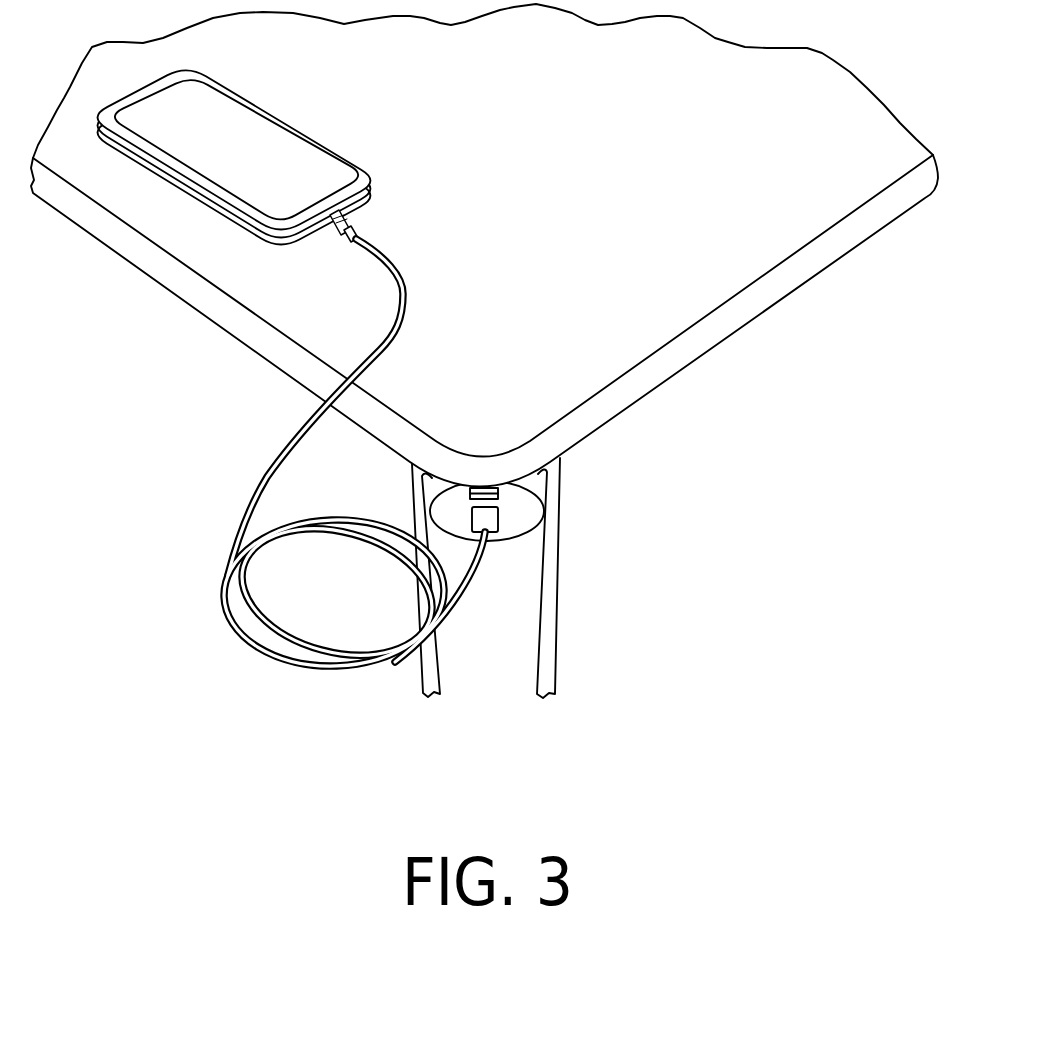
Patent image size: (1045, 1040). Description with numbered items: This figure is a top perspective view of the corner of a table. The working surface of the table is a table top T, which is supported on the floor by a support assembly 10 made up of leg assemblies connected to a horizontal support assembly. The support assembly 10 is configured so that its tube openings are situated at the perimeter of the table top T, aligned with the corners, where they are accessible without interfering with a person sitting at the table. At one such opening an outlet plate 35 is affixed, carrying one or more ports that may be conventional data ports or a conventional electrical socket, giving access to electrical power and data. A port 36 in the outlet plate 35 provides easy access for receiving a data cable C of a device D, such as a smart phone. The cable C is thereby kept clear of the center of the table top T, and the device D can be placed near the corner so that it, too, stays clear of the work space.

The support assembly 10 is at (578, 580).
The outlet plate 35 is at (518, 522).
The charging port slot 36 is at (496, 491).
The table top T is at (586, 166).
The device D is at (247, 132).
The data cable C is at (287, 443).